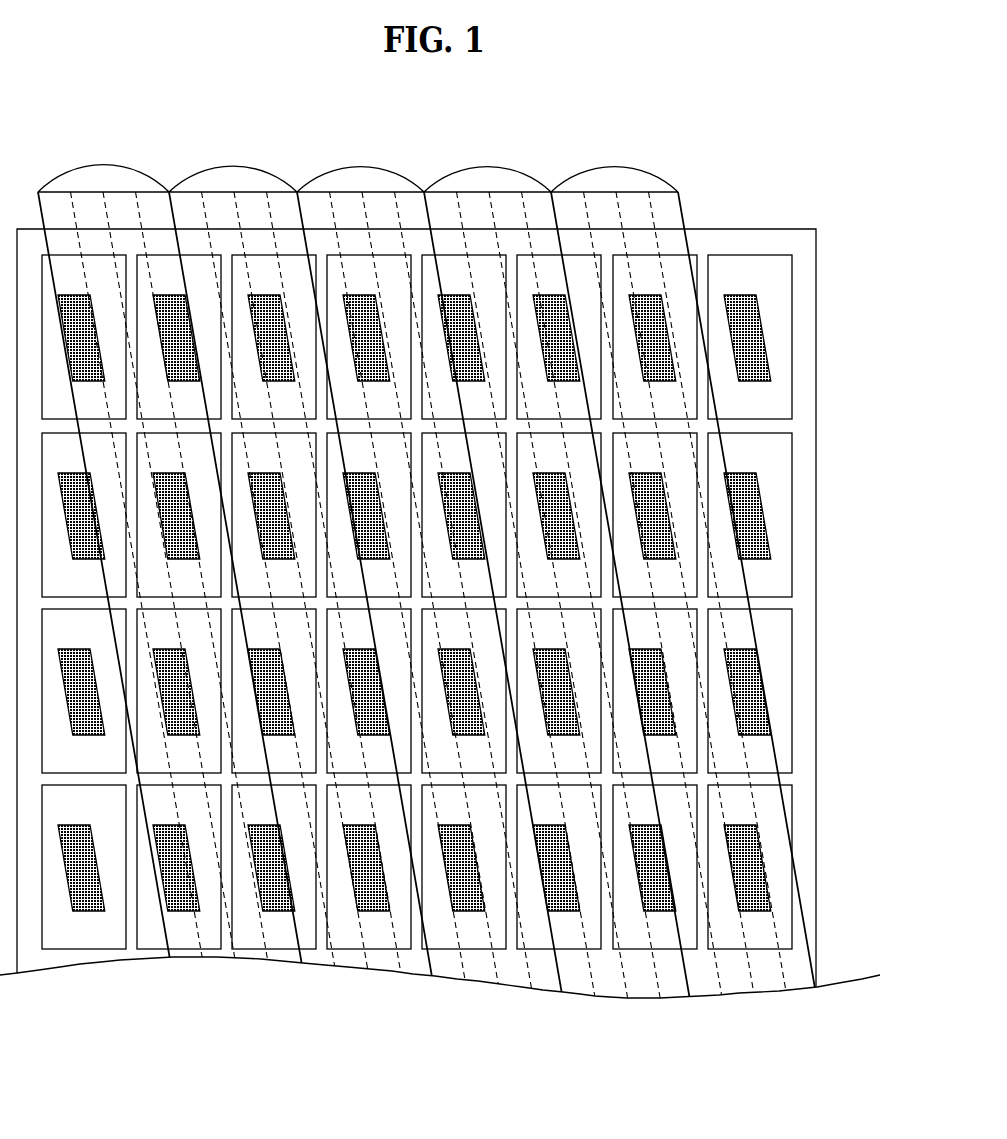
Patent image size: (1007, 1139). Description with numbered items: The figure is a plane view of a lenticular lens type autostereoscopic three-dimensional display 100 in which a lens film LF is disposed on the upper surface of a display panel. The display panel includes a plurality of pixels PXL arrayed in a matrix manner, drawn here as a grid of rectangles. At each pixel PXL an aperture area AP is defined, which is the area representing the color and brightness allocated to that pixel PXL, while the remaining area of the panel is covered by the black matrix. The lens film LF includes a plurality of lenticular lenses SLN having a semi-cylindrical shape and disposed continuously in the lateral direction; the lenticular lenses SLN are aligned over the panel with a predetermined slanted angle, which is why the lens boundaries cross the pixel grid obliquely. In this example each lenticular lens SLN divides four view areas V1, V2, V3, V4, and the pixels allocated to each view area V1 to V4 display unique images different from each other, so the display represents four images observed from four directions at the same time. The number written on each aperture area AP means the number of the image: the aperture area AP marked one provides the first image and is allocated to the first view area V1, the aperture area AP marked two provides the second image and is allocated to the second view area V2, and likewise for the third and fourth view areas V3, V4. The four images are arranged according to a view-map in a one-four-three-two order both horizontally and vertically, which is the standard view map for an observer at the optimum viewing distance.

The display device 100 is at (816, 497).
The pixel PXL is at (792, 305).
The aperture area AP is at (771, 352).
The lenticular lens SLN is at (358, 165).
The lens film LF is at (704, 212).
The first view area V1 is at (59, 200).
The second view area V2 is at (90, 200).
The third view area V3 is at (121, 200).
The fourth view area V4 is at (152, 200).